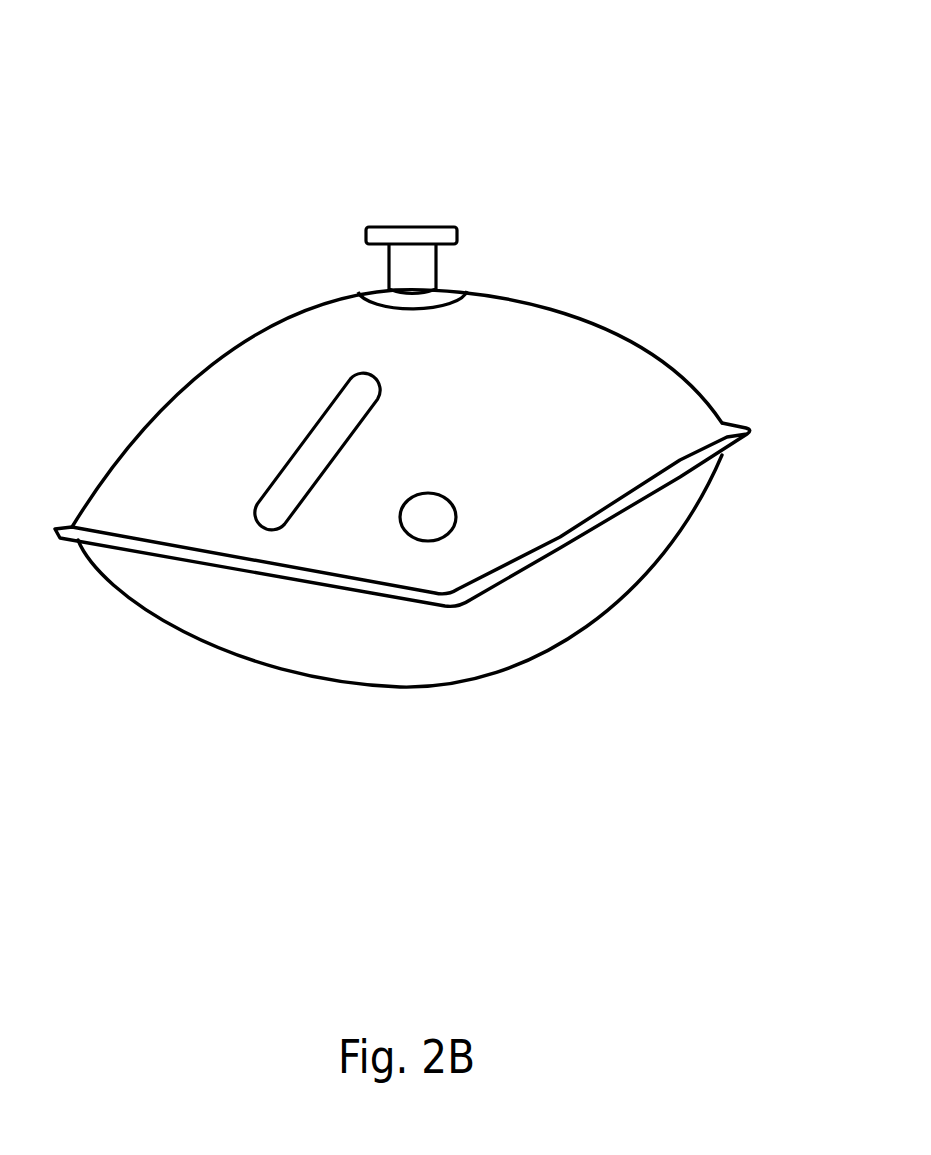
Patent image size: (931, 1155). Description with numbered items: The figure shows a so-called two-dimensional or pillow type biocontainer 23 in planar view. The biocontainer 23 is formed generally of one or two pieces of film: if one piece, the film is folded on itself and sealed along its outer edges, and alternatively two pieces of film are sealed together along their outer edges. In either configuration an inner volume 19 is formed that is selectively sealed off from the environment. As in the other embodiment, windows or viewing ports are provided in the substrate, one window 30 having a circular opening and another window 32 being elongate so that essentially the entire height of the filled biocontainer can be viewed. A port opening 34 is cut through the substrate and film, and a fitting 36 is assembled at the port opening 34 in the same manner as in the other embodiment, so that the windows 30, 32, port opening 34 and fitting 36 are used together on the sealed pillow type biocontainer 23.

The inner volume 19 is at (585, 575).
The biocontainer 23 is at (697, 510).
The window 30 is at (425, 523).
The window 32 is at (315, 448).
The port opening 34 is at (447, 300).
The fitting 36 is at (378, 233).